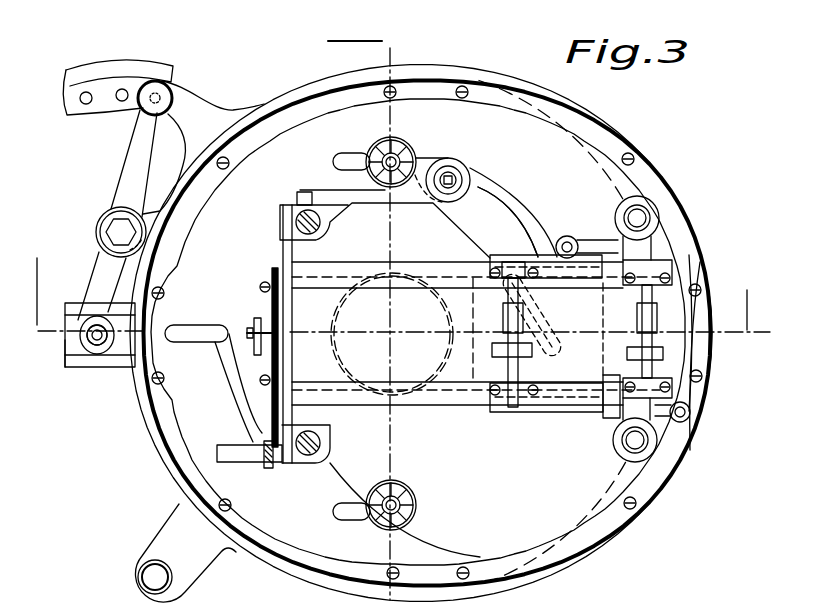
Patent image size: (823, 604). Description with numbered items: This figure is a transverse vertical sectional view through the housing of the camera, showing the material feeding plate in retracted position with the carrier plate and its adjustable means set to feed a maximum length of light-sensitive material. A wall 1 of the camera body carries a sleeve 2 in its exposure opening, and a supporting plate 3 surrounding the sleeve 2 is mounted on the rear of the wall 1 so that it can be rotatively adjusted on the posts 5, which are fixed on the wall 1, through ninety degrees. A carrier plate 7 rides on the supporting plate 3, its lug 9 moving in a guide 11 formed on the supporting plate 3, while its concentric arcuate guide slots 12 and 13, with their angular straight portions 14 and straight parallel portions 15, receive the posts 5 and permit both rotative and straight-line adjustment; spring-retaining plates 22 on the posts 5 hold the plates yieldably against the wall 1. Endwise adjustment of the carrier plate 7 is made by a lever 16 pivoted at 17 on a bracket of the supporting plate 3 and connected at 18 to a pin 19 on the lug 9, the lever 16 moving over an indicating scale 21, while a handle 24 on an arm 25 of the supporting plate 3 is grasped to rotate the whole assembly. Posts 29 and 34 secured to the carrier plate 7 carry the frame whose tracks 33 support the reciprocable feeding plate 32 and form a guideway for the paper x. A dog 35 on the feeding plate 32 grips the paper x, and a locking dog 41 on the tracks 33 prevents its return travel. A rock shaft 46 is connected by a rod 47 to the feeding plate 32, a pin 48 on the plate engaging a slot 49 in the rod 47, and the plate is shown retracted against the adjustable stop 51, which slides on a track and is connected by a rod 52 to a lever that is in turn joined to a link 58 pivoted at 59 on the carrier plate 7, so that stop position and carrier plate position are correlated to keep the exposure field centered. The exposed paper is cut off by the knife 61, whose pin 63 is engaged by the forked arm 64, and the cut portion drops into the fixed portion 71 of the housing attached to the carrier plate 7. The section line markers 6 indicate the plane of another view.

The wall 1 is at (118, 87).
The sleeve 2 is at (346, 371).
The supporting plate 3 is at (267, 562).
The posts 5 is at (413, 494).
The section line 6 is at (393, 298).
The carrier plate 7 is at (552, 331).
The lug 9 is at (70, 346).
The guide 11 is at (78, 304).
The arcuate guide slot 12 is at (530, 223).
The arcuate guide slot 13 is at (221, 388).
The angular straight portions 14 is at (192, 324).
The straight parallel portions 15 is at (348, 153).
The lever 16 is at (131, 157).
The pivot 17 is at (112, 218).
The connection 18 is at (95, 348).
The pin 19 is at (101, 337).
The indicating scale 21 is at (198, 103).
The spring-retaining plates 22 is at (403, 141).
The handle 24 is at (172, 578).
The arm 25 is at (170, 537).
The posts 29 is at (320, 224).
The feeding plate 32 is at (552, 420).
The tracks 33 is at (422, 266).
The posts 34 is at (657, 210).
The dog 35 is at (508, 334).
The locking dog 41 is at (621, 329).
The rock shaft 46 is at (457, 177).
The rod 47 is at (482, 225).
The pin 48 is at (551, 326).
The slot 49 is at (549, 313).
The adjustable stop 51 is at (612, 410).
The rod 52 is at (662, 416).
The link 58 is at (597, 238).
The pivot 59 is at (572, 238).
The knife 61 is at (292, 296).
The pin 63 is at (262, 318).
The forked arm 64 is at (258, 413).
The fixed portion 71 is at (620, 138).
The paper x is at (680, 318).